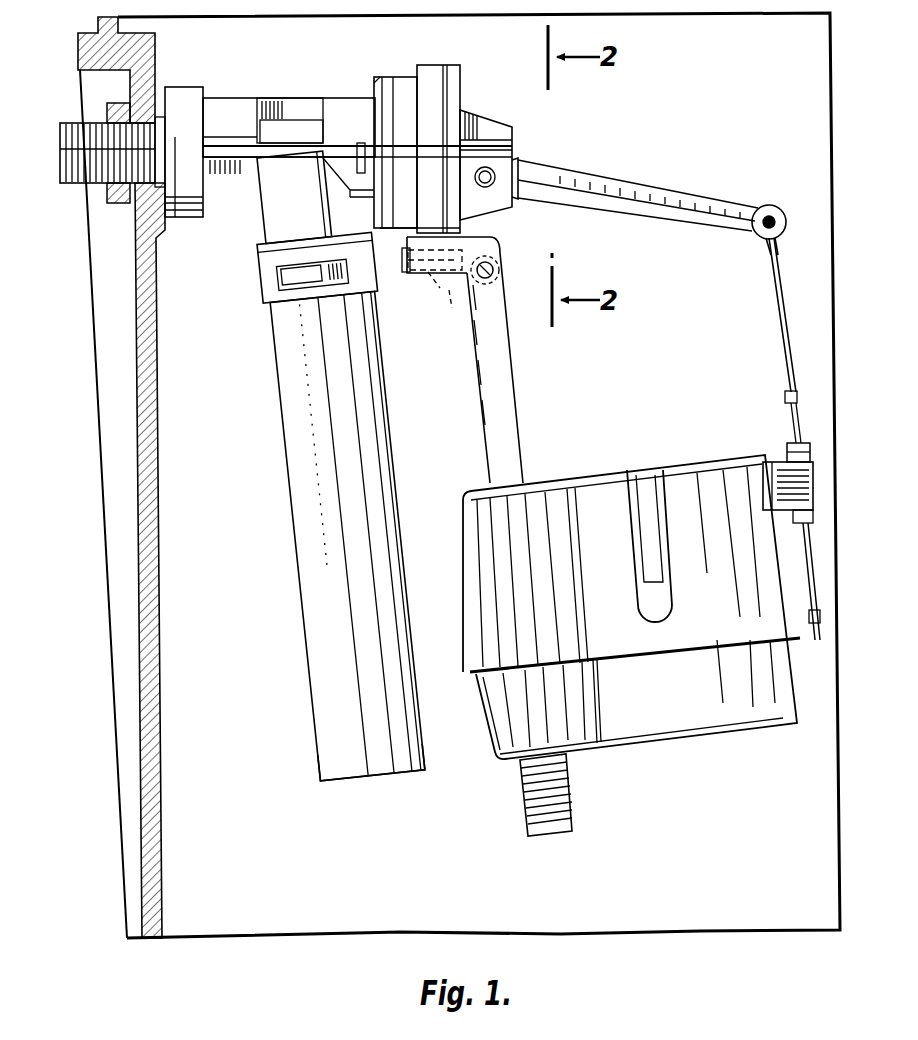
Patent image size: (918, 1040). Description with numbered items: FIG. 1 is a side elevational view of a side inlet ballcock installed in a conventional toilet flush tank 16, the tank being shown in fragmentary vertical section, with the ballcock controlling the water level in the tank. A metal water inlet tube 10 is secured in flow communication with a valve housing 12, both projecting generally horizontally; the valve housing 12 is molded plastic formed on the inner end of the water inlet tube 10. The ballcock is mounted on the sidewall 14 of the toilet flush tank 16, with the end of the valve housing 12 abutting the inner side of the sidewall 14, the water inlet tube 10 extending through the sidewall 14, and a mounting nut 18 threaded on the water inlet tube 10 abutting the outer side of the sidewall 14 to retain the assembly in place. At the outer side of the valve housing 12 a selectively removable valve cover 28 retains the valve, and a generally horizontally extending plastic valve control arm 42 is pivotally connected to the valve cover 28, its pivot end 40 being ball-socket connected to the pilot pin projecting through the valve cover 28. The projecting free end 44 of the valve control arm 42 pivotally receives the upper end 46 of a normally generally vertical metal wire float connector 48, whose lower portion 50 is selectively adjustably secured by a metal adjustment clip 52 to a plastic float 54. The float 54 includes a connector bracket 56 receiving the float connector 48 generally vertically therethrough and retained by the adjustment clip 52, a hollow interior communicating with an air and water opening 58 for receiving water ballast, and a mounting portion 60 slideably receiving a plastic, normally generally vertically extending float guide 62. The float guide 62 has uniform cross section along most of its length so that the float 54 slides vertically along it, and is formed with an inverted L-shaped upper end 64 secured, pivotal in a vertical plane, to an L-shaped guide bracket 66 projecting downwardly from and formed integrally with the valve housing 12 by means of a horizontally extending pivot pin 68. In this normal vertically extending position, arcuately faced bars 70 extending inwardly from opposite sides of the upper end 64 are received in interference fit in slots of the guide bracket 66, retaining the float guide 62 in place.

The water inlet tube 10 is at (88, 118).
The valve housing 12 is at (290, 94).
The sidewall 14 is at (158, 291).
The toilet flush tank 16 is at (128, 354).
The mounting nut 18 is at (122, 205).
The valve cover 28 is at (473, 122).
The pivot end 40 is at (522, 157).
The valve control arm 42 is at (592, 168).
The free end 44 is at (763, 211).
The upper end 46 is at (765, 243).
The float connector 48 is at (775, 306).
The lower portion 50 is at (818, 586).
The adjustment clip 52 is at (790, 443).
The float 54 is at (740, 738).
The connector bracket 56 is at (782, 465).
The air and water opening 58 is at (657, 601).
The mounting portion 60 is at (472, 490).
The float guide 62 is at (527, 419).
The upper end 64 is at (497, 237).
The guide bracket 66 is at (403, 263).
The pivot pin 68 is at (493, 270).
The bars 70 is at (455, 300).